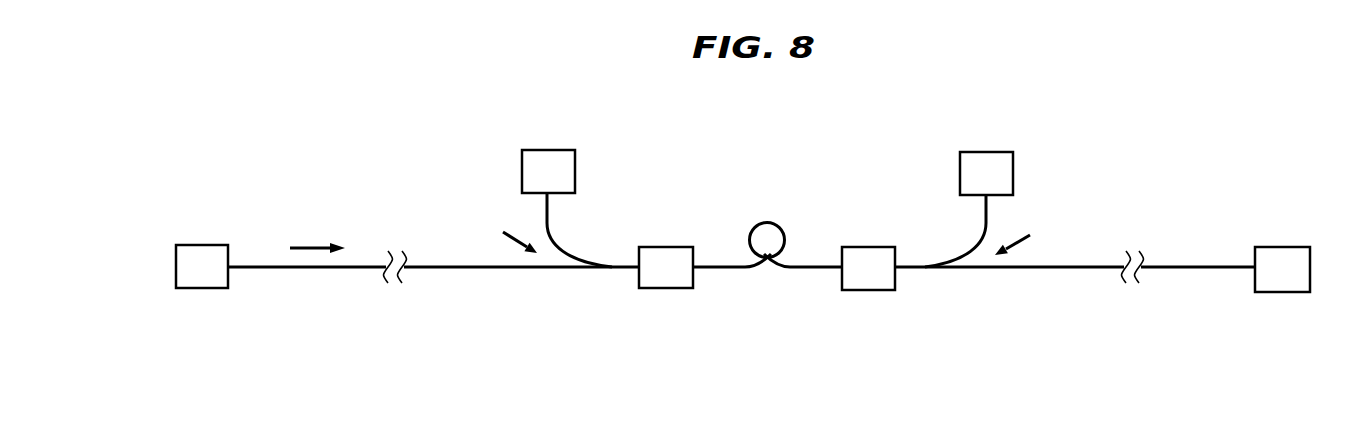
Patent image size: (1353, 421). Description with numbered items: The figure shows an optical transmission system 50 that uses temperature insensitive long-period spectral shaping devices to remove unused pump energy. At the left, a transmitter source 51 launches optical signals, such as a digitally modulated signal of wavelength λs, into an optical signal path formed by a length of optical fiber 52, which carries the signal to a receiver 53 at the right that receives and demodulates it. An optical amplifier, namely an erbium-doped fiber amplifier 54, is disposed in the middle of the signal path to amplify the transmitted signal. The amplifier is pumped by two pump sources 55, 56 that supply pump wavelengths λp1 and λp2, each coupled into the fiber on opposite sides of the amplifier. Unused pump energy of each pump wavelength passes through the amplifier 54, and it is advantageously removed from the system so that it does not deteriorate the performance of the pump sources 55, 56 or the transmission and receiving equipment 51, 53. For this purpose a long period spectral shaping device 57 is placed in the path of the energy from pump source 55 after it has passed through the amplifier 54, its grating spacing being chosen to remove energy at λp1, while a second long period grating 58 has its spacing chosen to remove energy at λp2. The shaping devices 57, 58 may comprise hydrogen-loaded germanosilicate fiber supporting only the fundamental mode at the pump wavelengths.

The optical transmission system 50 is at (1188, 100).
The transmitter source 51 is at (198, 245).
The optical fiber 52 is at (327, 268).
The receiver 53 is at (1275, 247).
The erbium-doped fiber amplifier 54 is at (752, 232).
The pump source 55 is at (975, 152).
The pump source 56 is at (543, 150).
The long period spectral shaping device 57 is at (663, 288).
The second long period grating 58 is at (867, 290).